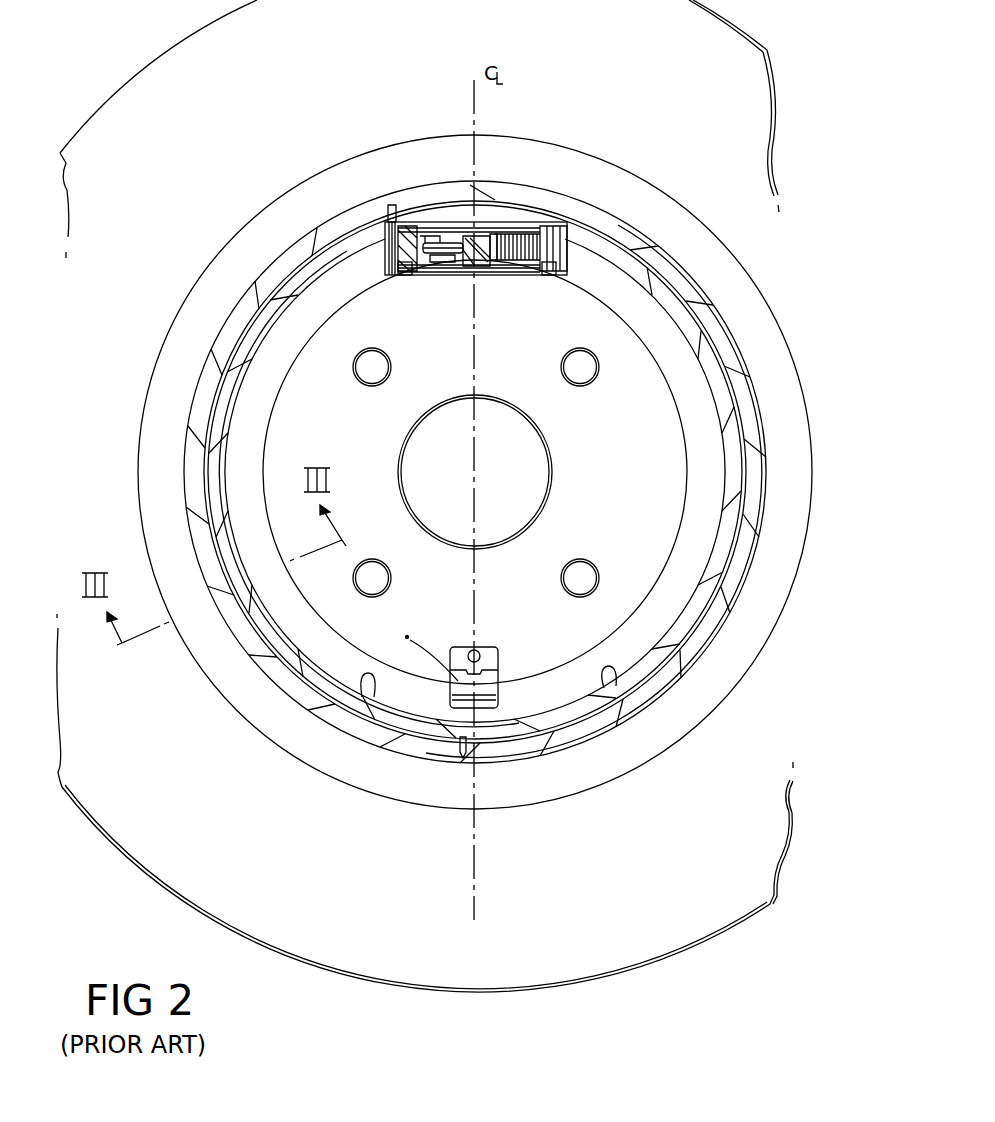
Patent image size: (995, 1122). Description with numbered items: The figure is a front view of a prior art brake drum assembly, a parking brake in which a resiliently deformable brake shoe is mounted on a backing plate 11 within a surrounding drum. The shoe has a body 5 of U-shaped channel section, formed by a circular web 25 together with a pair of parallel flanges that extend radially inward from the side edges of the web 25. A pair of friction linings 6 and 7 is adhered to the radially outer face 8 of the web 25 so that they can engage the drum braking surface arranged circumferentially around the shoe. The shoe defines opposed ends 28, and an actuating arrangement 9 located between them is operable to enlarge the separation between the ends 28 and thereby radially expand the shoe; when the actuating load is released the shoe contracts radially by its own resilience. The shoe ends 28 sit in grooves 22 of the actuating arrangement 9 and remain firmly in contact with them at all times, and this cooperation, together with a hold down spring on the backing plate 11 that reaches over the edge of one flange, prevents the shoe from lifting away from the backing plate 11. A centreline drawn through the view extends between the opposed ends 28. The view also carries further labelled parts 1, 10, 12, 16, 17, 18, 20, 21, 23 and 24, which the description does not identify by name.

The drum brake 1 is at (112, 468).
The body 5 is at (690, 680).
The friction lining 6 is at (747, 592).
The friction lining 7 is at (306, 686).
The radially outer face 8 is at (464, 760).
The actuating arrangement 9 is at (392, 205).
The wheel cylinder body 10 is at (450, 222).
The backing plate 11 is at (325, 752).
The end cap 12 is at (417, 222).
The adjuster 16 is at (468, 275).
The piston 17 is at (448, 275).
The push rod 18 is at (455, 222).
The adjuster nut 20 is at (503, 277).
The spring 21 is at (530, 222).
The groove 22 is at (398, 222).
The drum 23 is at (765, 490).
The brake lining 24 is at (722, 340).
The web 25 is at (375, 700).
The opposed ends 28 is at (408, 277).